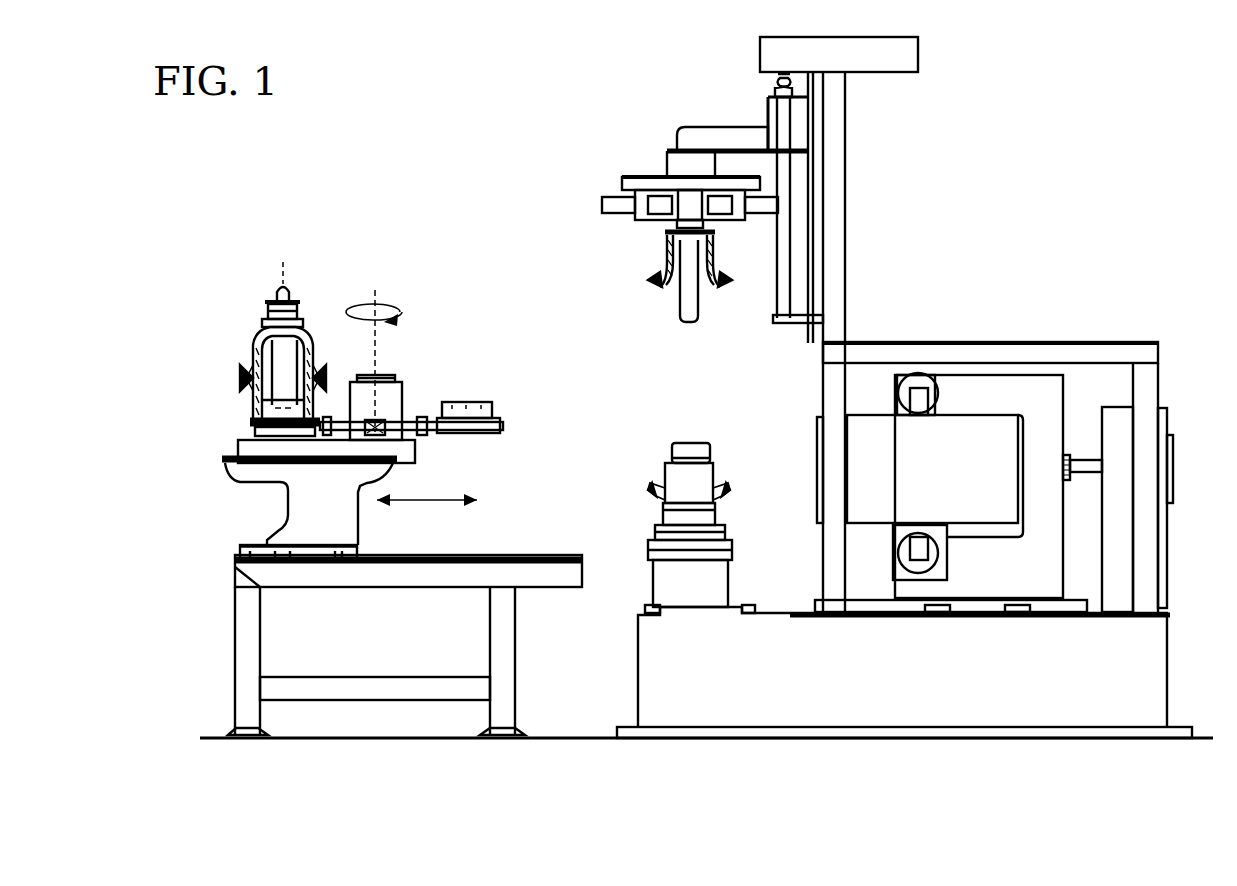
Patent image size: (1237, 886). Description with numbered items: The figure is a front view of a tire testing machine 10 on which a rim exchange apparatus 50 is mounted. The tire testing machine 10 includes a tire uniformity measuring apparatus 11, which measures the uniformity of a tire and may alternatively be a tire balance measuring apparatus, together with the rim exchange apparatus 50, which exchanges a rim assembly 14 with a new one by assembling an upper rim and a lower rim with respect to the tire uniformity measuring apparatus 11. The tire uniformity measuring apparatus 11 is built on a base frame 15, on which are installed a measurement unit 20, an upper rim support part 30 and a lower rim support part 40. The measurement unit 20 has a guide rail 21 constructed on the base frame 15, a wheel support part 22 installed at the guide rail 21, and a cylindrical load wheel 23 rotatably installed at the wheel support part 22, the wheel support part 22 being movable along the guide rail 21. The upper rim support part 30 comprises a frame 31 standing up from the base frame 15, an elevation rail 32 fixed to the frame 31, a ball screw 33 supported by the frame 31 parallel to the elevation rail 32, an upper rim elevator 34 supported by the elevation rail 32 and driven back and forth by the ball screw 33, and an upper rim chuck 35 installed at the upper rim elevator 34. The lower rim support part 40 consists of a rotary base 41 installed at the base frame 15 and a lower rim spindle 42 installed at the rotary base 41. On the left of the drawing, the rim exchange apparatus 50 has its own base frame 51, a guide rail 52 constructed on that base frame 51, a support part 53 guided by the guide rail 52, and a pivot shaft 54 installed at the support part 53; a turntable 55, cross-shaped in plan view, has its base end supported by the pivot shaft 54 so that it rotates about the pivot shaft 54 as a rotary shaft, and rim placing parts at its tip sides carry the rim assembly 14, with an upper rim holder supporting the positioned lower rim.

The tire testing machine 10 is at (675, 424).
The tire uniformity measuring apparatus 11 is at (876, 424).
The rim assembly 14 is at (228, 305).
The base frame 15 is at (904, 717).
The measurement unit 20 is at (1017, 536).
The guide rail 21 is at (1080, 709).
The wheel support part 22 is at (978, 434).
The load wheel 23 is at (1033, 483).
The upper rim support part 30 is at (742, 317).
The frame 31 is at (856, 325).
The elevation rail 32 is at (874, 207).
The ball screw 33 is at (836, 198).
The upper rim elevator 34 is at (737, 99).
The upper rim chuck 35 is at (657, 197).
The lower rim support part 40 is at (651, 522).
The rotary base 41 is at (700, 627).
The lower rim spindle 42 is at (702, 396).
The rim exchange apparatus 50 is at (374, 452).
The base frame 51 is at (423, 651).
The guide rail 52 is at (408, 513).
The support part 53 is at (328, 499).
The pivot shaft 54 is at (400, 359).
The turntable 55 is at (415, 478).